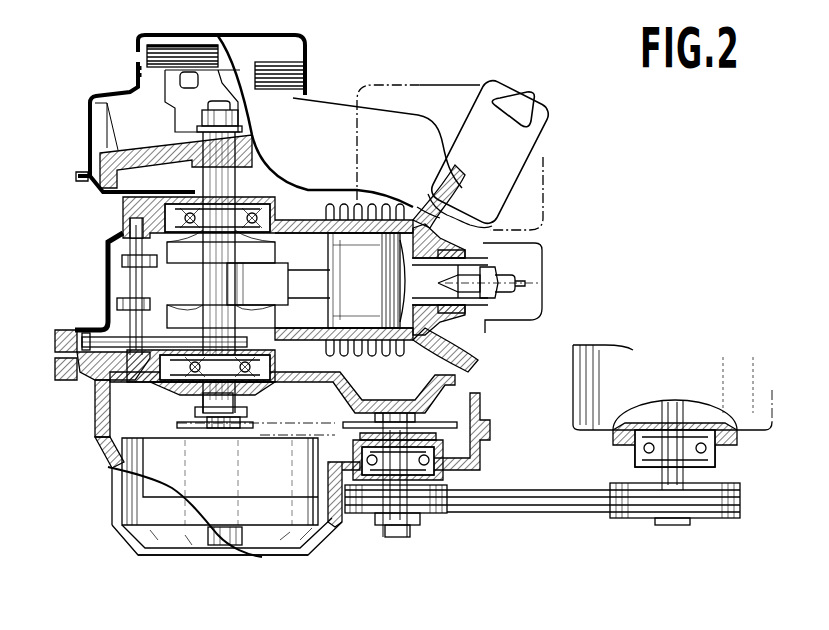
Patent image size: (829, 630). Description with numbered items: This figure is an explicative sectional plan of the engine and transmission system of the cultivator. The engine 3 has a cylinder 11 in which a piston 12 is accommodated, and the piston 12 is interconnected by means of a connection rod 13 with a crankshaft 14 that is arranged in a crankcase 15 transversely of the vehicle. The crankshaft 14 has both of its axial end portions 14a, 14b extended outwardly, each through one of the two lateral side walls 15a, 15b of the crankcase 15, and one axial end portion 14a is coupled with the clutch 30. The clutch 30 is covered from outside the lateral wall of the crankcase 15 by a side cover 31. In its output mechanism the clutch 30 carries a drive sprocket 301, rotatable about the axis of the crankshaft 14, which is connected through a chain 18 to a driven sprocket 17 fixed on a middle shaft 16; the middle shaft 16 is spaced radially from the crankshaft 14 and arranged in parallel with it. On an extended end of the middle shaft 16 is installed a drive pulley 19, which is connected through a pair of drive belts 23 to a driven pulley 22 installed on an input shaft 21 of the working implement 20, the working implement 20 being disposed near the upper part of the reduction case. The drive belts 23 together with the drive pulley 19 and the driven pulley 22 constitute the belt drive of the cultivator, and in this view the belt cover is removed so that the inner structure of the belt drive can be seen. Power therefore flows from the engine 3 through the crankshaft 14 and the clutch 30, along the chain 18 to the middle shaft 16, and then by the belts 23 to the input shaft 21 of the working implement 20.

The engine 3 is at (519, 267).
The cylinder 11 is at (303, 223).
The piston 12 is at (337, 253).
The connection rod 13 is at (235, 280).
The crankshaft 14 is at (210, 233).
The axial end portion of crankshaft 14a is at (232, 395).
The axial end portion of crankshaft 14b is at (235, 150).
The crankcase 15 is at (120, 228).
The lateral side wall of crankcase 15a is at (157, 393).
The lateral side wall of crankcase 15b is at (165, 198).
The middle shaft 16 is at (415, 442).
The driven sprocket 17 is at (440, 423).
The chain 18 is at (307, 442).
The drive pulley 19 is at (443, 513).
The working implement 20 is at (765, 430).
The input shaft 21 is at (670, 407).
The driven pulley 22 is at (740, 487).
The drive belts 23 is at (540, 497).
The clutch 30 is at (225, 518).
The drive sprocket 301 is at (248, 442).
The side cover 31 is at (300, 558).